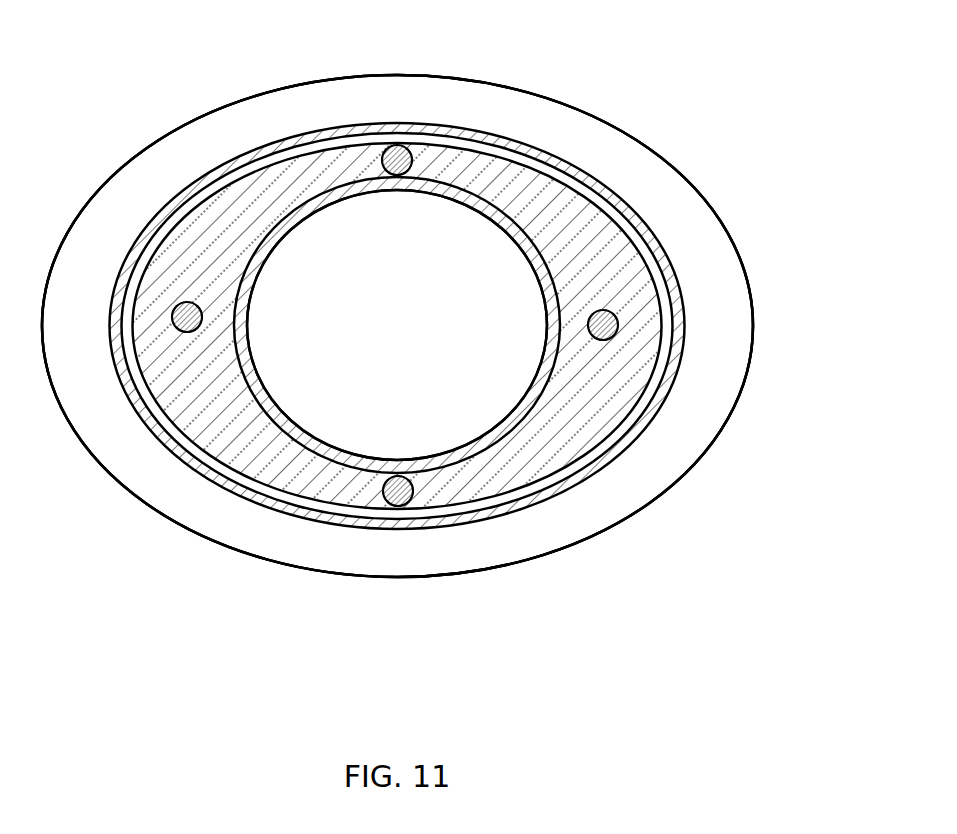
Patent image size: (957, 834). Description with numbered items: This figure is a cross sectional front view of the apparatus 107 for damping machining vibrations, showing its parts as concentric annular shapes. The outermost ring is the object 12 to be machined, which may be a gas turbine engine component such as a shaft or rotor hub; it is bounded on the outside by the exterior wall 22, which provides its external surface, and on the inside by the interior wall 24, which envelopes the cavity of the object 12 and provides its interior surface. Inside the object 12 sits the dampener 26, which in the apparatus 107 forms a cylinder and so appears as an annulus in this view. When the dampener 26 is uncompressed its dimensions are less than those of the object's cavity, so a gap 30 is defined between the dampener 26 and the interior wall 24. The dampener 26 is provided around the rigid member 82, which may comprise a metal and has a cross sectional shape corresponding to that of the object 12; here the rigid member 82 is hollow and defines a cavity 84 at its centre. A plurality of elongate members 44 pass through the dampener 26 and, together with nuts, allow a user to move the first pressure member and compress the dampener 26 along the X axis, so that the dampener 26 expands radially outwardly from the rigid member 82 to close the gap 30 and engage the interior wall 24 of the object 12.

The apparatus 107 is at (192, 617).
The object 12 is at (546, 532).
The exterior wall 22 is at (438, 579).
The interior wall 24 is at (327, 524).
The gap 30 is at (507, 152).
The dampener 26 is at (585, 243).
The rigid member 82 is at (536, 268).
The cavity 84 is at (380, 348).
The elongate members 44 is at (387, 188).